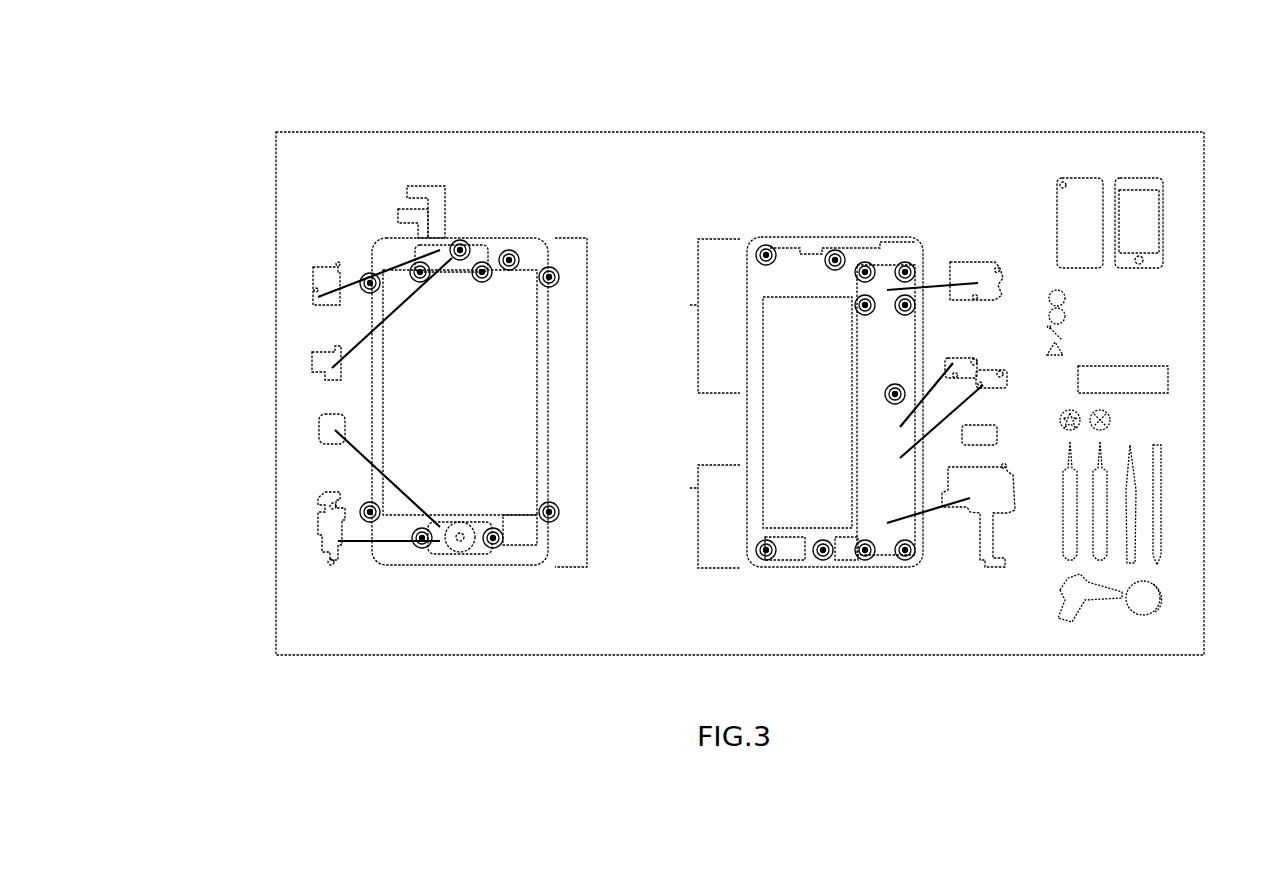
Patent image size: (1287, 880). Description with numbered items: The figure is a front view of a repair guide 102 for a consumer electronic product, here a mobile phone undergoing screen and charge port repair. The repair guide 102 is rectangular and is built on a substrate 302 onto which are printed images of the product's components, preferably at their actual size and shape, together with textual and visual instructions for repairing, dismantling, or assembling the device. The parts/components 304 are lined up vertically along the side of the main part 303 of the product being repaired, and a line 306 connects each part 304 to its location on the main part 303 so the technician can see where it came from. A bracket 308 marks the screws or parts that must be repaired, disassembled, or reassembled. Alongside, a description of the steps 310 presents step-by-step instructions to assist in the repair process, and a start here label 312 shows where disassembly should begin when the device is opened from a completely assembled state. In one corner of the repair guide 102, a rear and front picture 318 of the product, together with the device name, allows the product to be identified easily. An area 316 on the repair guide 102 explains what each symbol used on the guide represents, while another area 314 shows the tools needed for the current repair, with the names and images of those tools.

The repair guide 102 is at (1057, 106).
The substrate 302 is at (437, 132).
The main part 303 is at (497, 570).
The parts/components 304 is at (318, 283).
The line 306 is at (398, 267).
The bracket 308 is at (571, 568).
The description of the steps 310 is at (633, 515).
The start here label 312 is at (848, 600).
The area showing tools 314 is at (1175, 512).
The area showing symbols 316 is at (1175, 318).
The rear and front picture 318 is at (1175, 219).